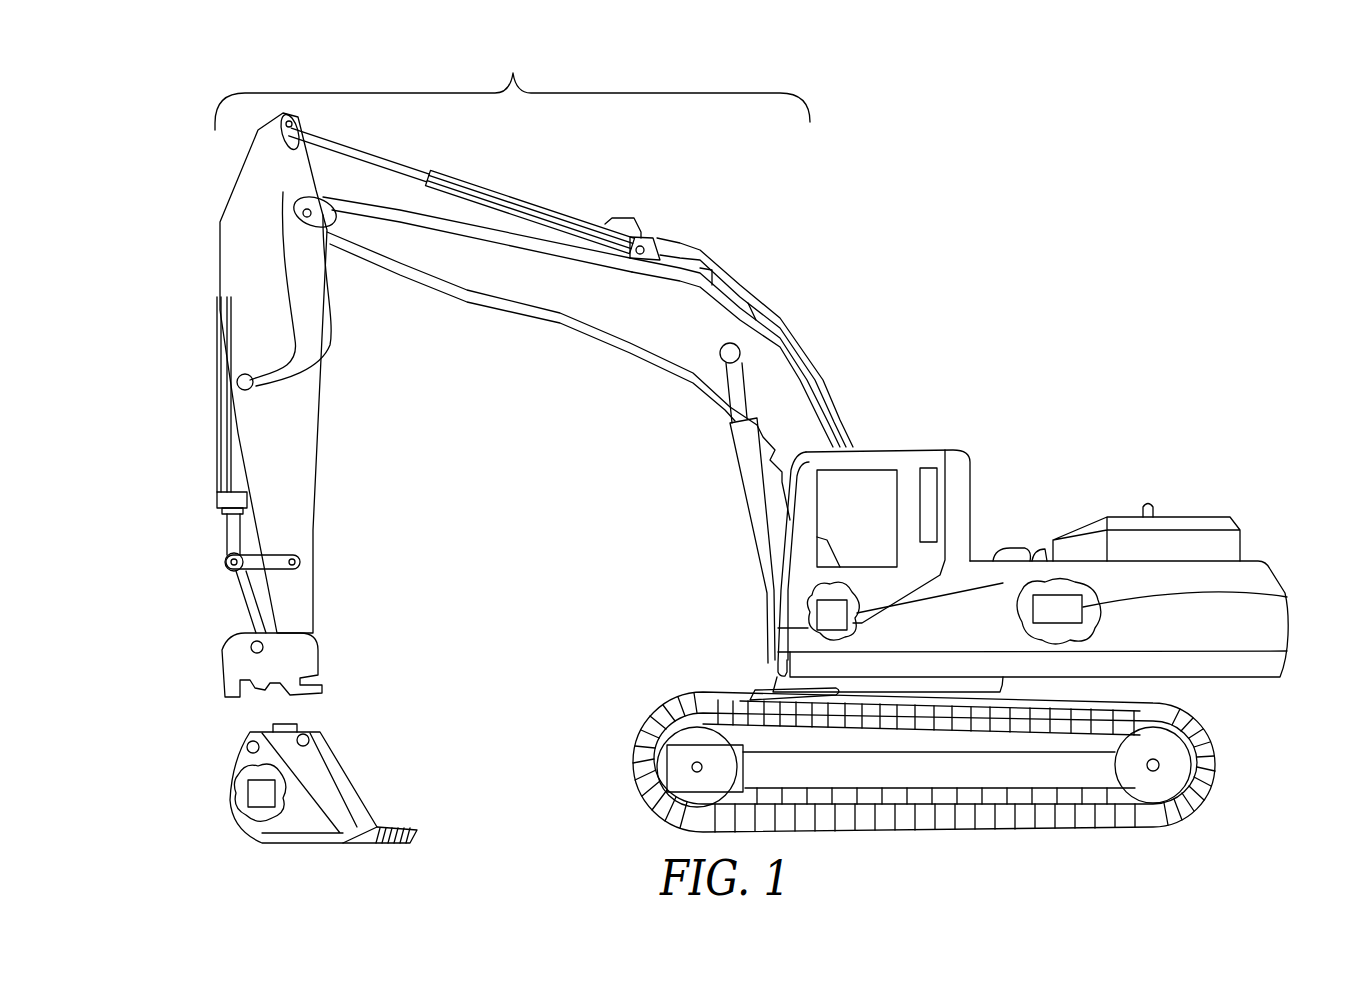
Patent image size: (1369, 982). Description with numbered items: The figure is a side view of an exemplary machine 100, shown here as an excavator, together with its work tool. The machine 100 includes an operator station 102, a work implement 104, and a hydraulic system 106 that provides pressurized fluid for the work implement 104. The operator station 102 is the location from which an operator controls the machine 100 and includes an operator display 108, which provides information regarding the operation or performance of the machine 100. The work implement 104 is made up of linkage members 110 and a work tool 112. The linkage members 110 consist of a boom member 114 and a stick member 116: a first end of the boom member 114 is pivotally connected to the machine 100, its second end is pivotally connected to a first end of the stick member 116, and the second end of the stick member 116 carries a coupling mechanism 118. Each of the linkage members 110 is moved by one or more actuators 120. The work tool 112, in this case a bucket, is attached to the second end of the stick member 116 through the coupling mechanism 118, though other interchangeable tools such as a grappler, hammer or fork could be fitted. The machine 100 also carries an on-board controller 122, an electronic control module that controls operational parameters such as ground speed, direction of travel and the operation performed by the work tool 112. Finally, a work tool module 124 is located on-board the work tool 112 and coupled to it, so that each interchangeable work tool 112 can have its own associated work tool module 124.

The machine 100 is at (1026, 302).
The operator station 102 is at (867, 537).
The work implement 104 is at (512, 85).
The hydraulic system 106 is at (1287, 597).
The operator display 108 is at (833, 540).
The linkage members 110 is at (192, 197).
The work tool 112 is at (293, 783).
The boom member 114 is at (606, 314).
The stick member 116 is at (318, 452).
The coupling mechanism 118 is at (225, 663).
The actuators 120 is at (507, 197).
The on-board controller 122 is at (812, 617).
The work tool module 124 is at (248, 795).